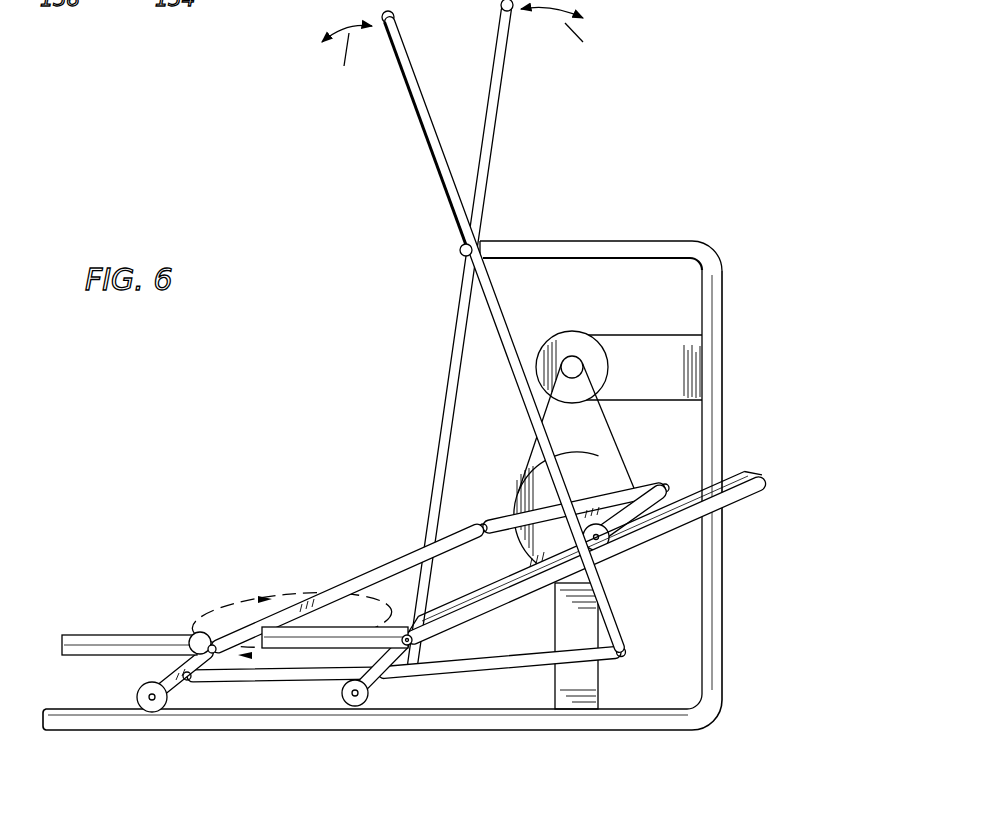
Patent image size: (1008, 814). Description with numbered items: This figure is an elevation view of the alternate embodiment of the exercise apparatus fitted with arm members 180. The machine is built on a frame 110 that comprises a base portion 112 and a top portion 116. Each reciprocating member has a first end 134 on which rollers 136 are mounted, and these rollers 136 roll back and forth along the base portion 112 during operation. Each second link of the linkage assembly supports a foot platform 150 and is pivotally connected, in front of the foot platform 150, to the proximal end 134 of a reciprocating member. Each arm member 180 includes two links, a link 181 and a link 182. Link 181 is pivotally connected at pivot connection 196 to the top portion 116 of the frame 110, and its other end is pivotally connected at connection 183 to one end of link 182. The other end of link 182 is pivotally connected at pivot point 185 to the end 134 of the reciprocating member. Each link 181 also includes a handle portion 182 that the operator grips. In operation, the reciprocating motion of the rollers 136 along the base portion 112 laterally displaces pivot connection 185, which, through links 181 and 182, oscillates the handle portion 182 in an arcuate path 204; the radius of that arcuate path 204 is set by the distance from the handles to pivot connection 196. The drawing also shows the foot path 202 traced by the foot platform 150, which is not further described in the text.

The frame 110 is at (724, 409).
The base portion 112 is at (556, 710).
The top portion 116 is at (595, 241).
The first end 134 is at (173, 688).
The rollers 136 is at (142, 703).
The foot platform 150 is at (125, 634).
The arm members 180 is at (494, 343).
The link 181 is at (517, 402).
The link / handle portion 182 is at (503, 9).
The connection 183 is at (627, 652).
The pivot point 185 is at (189, 679).
The pivot connection 196 is at (460, 250).
The foot platform path 202 is at (303, 594).
The arcuate path 204 is at (470, 50).